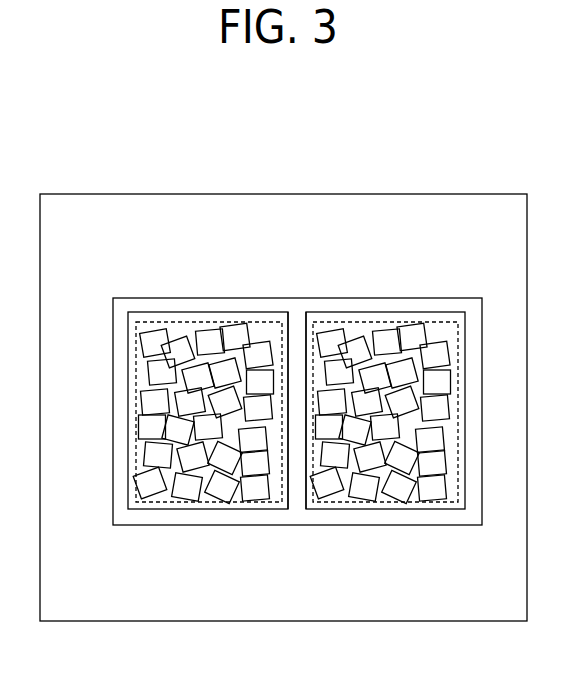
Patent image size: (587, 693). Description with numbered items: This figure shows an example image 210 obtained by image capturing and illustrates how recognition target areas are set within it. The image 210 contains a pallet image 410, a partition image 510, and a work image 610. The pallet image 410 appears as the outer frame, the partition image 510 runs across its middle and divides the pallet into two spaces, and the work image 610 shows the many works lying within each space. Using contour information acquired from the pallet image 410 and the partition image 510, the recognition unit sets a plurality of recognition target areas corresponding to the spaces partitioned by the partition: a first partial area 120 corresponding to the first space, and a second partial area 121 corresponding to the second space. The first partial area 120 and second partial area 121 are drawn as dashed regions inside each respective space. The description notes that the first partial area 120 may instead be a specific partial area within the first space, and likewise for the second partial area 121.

The image 210 is at (353, 194).
The pallet image 410 is at (186, 298).
The partition image 510 is at (299, 510).
The first partial area 120 is at (165, 502).
The second partial area 121 is at (425, 502).
The work image 610 is at (358, 490).